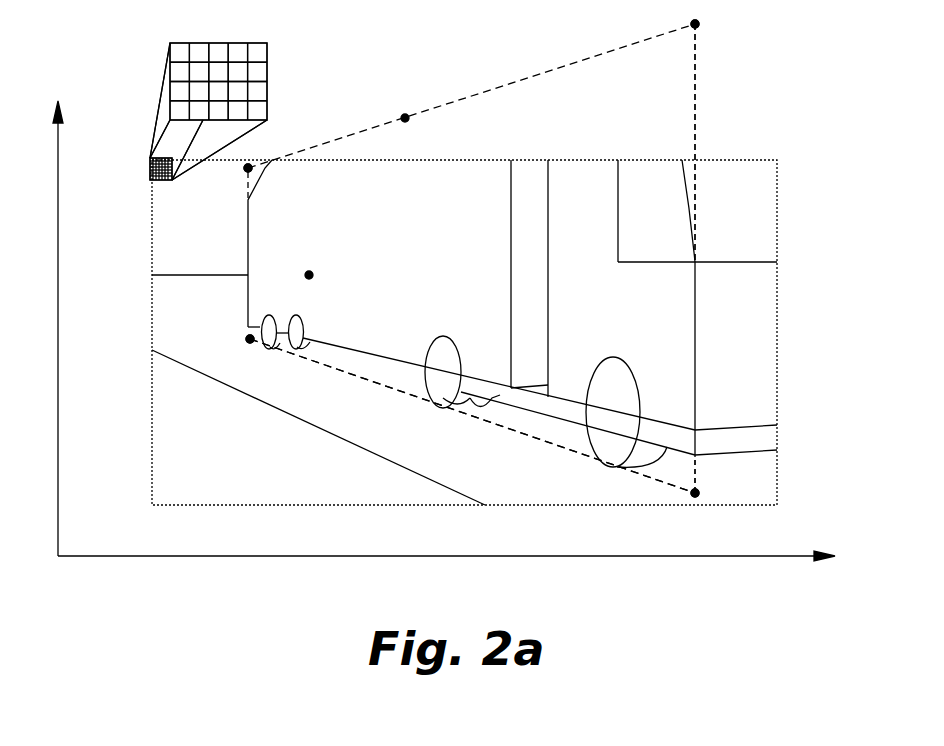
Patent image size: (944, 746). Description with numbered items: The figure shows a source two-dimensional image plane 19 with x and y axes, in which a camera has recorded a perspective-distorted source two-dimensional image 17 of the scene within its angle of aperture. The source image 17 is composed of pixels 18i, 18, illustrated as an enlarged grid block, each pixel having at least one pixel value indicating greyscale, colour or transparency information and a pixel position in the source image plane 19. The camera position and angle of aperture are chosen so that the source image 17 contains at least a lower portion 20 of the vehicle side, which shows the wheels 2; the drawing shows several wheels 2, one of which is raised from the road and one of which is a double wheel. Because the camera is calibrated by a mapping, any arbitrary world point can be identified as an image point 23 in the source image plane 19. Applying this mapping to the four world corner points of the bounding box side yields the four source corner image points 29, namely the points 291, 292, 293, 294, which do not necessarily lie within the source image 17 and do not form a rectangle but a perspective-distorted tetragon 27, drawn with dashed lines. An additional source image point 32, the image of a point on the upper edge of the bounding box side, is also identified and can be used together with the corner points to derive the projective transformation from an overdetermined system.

The pixels 18i is at (257, 55).
The pixels 18 is at (208, 90).
The source 2D image 17 is at (778, 350).
The source 2D image plane 19 is at (114, 548).
The lower portion of the vehicle side 20 is at (381, 340).
The wheels 2 is at (292, 342).
The perspective-distorted tetragon 27 is at (502, 90).
The source corner image points 29 is at (477, 286).
The first source corner image point 291 is at (244, 172).
The second source corner image point 292 is at (246, 341).
The third source corner image point 293 is at (699, 497).
The fourth source corner image point 294 is at (699, 28).
The additional source image point 32 is at (408, 122).
The image point 23 is at (313, 271).